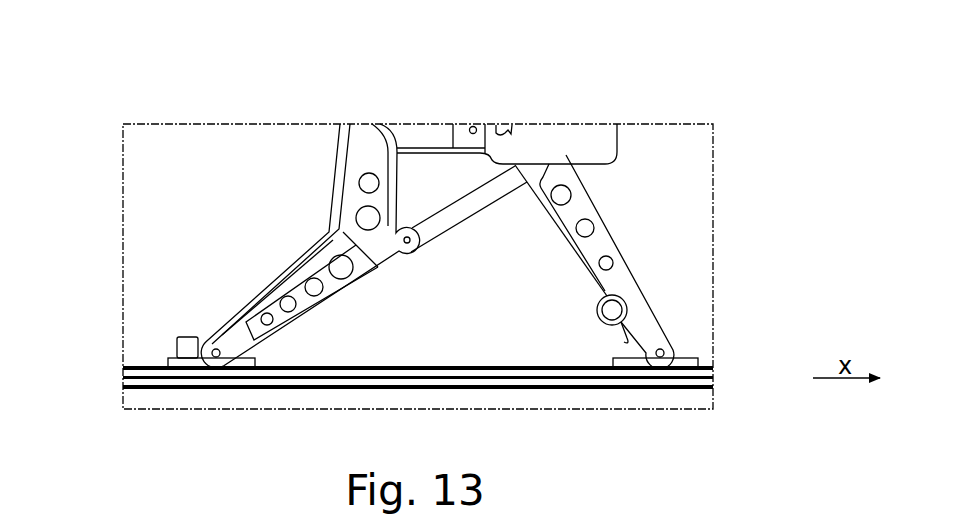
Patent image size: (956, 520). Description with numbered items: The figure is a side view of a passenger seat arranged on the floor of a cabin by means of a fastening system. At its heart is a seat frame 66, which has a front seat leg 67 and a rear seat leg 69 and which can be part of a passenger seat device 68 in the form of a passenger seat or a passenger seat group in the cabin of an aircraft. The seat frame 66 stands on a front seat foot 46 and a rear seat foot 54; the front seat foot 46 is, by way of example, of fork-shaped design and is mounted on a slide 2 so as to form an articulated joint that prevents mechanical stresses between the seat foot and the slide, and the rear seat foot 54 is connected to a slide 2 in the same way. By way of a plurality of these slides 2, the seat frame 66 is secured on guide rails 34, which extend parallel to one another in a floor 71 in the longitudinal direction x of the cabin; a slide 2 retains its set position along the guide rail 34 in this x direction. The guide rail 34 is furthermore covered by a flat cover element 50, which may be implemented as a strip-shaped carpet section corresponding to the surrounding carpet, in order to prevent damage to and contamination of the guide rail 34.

The slide 2 is at (177, 370).
The guide rail 34 is at (700, 371).
The front seat foot 46 is at (645, 327).
The cover element 50 is at (461, 386).
The rear seat foot 54 is at (233, 338).
The seat frame 66 is at (619, 258).
The front seat leg 67 is at (610, 215).
The passenger seat device 68 is at (572, 106).
The rear seat leg 69 is at (265, 267).
The floor 71 is at (115, 370).